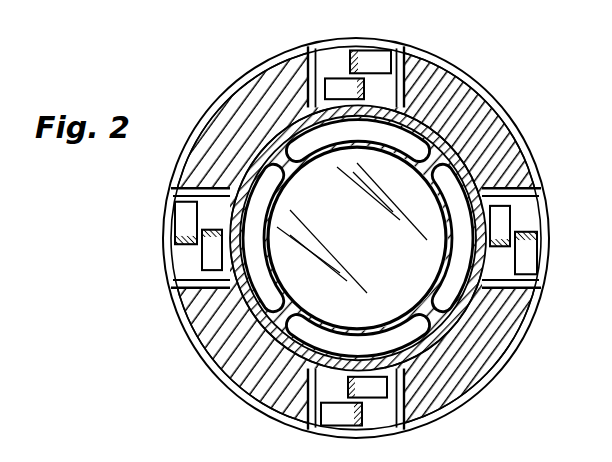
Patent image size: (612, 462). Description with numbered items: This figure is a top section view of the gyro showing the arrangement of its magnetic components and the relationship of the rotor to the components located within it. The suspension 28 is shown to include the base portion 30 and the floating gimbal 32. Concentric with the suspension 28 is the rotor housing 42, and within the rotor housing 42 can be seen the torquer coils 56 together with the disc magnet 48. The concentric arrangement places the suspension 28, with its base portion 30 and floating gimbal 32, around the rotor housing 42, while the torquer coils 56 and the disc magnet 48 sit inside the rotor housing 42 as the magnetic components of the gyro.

The suspension 28 is at (168, 283).
The base portion 30 is at (191, 190).
The floating gimbal 32 is at (253, 91).
The rotor housing 42 is at (259, 323).
The disc magnet 48 is at (390, 187).
The torquer coils 56 is at (414, 338).